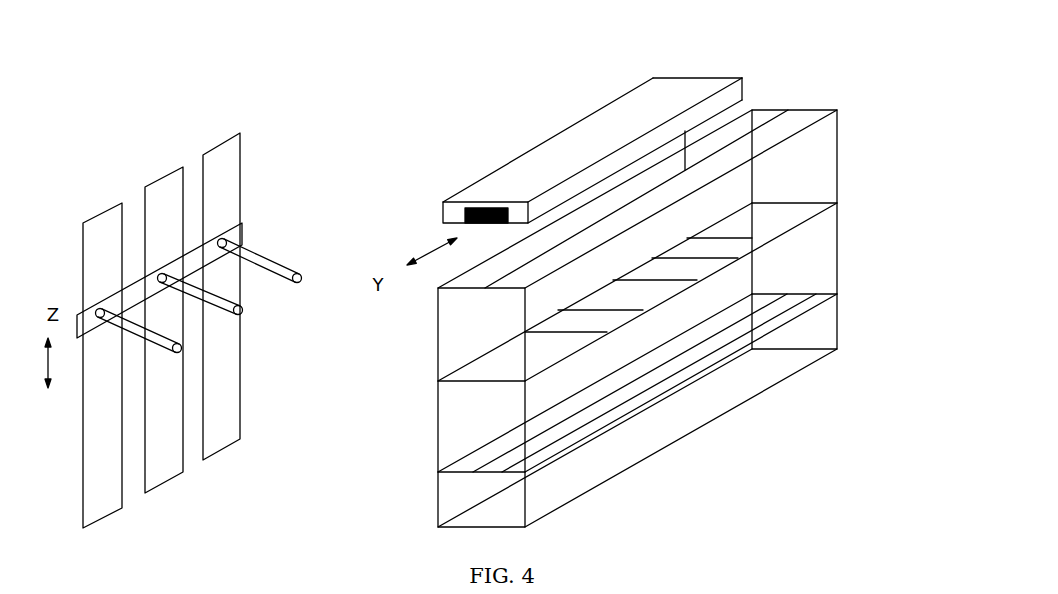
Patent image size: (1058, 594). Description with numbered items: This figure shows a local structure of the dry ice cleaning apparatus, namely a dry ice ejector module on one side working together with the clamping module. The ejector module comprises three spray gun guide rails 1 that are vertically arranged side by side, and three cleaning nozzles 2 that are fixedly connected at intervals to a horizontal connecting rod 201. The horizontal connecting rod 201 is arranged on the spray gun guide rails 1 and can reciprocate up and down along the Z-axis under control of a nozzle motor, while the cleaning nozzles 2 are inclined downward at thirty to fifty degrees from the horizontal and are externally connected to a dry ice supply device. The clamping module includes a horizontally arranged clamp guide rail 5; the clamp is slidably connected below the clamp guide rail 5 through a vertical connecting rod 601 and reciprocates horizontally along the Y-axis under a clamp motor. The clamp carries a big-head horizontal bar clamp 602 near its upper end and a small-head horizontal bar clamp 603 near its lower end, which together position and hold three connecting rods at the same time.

The spray gun guide rail 1 is at (161, 298).
The horizontal connecting rod 201 is at (242, 223).
The cleaning nozzle 2 is at (278, 262).
The clamp guide rail 5 is at (647, 102).
The vertical connecting rod 601 is at (753, 118).
The big-head horizontal bar clamp 602 is at (722, 218).
The small-head horizontal bar clamp 603 is at (752, 327).